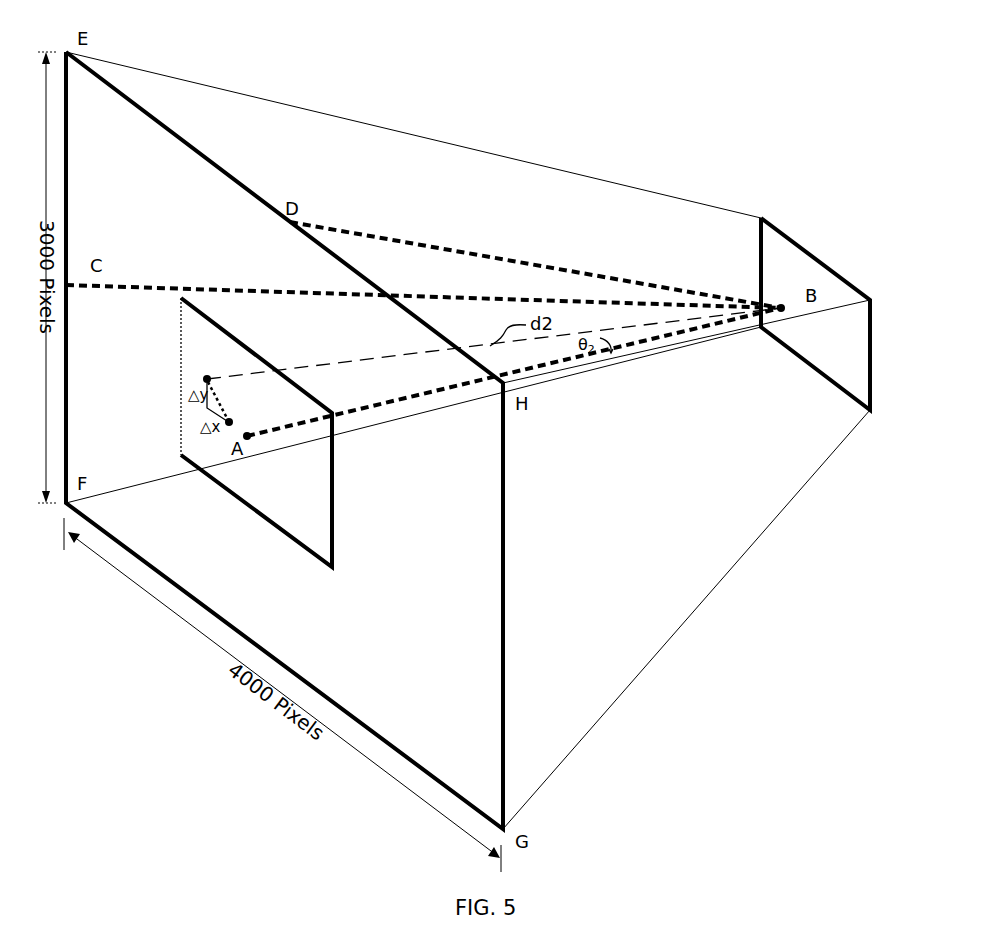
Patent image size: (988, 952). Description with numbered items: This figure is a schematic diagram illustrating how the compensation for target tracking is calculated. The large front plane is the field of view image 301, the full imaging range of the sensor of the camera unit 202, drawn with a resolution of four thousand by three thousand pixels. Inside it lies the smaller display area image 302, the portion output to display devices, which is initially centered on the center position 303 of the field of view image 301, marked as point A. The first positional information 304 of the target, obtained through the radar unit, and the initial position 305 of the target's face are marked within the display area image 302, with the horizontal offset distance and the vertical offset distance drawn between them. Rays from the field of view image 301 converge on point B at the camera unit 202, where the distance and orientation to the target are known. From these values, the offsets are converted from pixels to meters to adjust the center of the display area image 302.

The camera unit 202 is at (857, 342).
The field of view image 301 is at (488, 642).
The display area image 302 is at (318, 538).
The center position 303 is at (250, 438).
The first positional information 304 is at (208, 375).
The initial position 305 is at (231, 419).